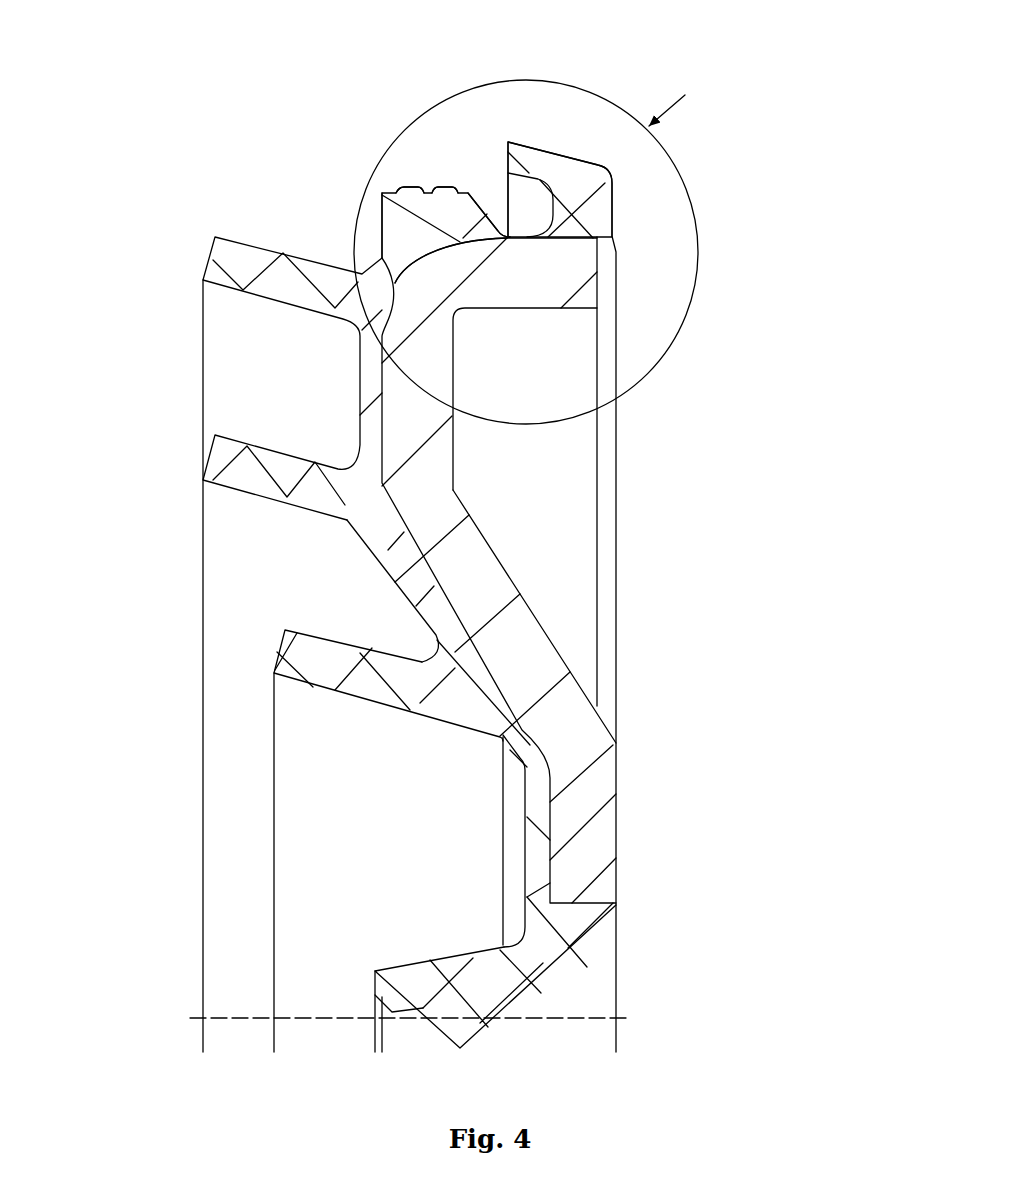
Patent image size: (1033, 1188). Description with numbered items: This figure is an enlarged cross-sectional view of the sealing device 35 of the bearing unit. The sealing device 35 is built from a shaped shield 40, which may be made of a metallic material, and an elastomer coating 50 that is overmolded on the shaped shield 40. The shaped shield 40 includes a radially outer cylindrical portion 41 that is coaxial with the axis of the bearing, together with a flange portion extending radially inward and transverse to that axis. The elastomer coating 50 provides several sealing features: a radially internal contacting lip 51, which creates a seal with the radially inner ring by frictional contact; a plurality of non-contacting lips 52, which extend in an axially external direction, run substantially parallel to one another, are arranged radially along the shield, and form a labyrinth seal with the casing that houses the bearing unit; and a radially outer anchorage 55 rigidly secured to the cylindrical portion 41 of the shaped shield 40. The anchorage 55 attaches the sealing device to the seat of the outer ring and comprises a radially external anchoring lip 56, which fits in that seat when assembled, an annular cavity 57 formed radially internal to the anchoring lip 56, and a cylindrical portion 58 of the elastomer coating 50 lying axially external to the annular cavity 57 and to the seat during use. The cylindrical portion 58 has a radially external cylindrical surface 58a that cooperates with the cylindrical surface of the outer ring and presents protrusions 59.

The sealing device 35 is at (234, 165).
The shaped shield 40 is at (534, 587).
The radially outer cylindrical portion 41 is at (527, 283).
The elastomer coating 50 is at (490, 787).
The radially internal contacting lip 51 is at (460, 1028).
The non-contacting lips 52 is at (303, 660).
The radially outer anchorage 55 is at (440, 121).
The radially external anchoring lip 56 is at (530, 156).
The annular cavity 57 is at (530, 210).
The cylindrical portion 58 is at (427, 215).
The radially external cylindrical surface 58a is at (383, 186).
The protrusions 59 is at (447, 184).